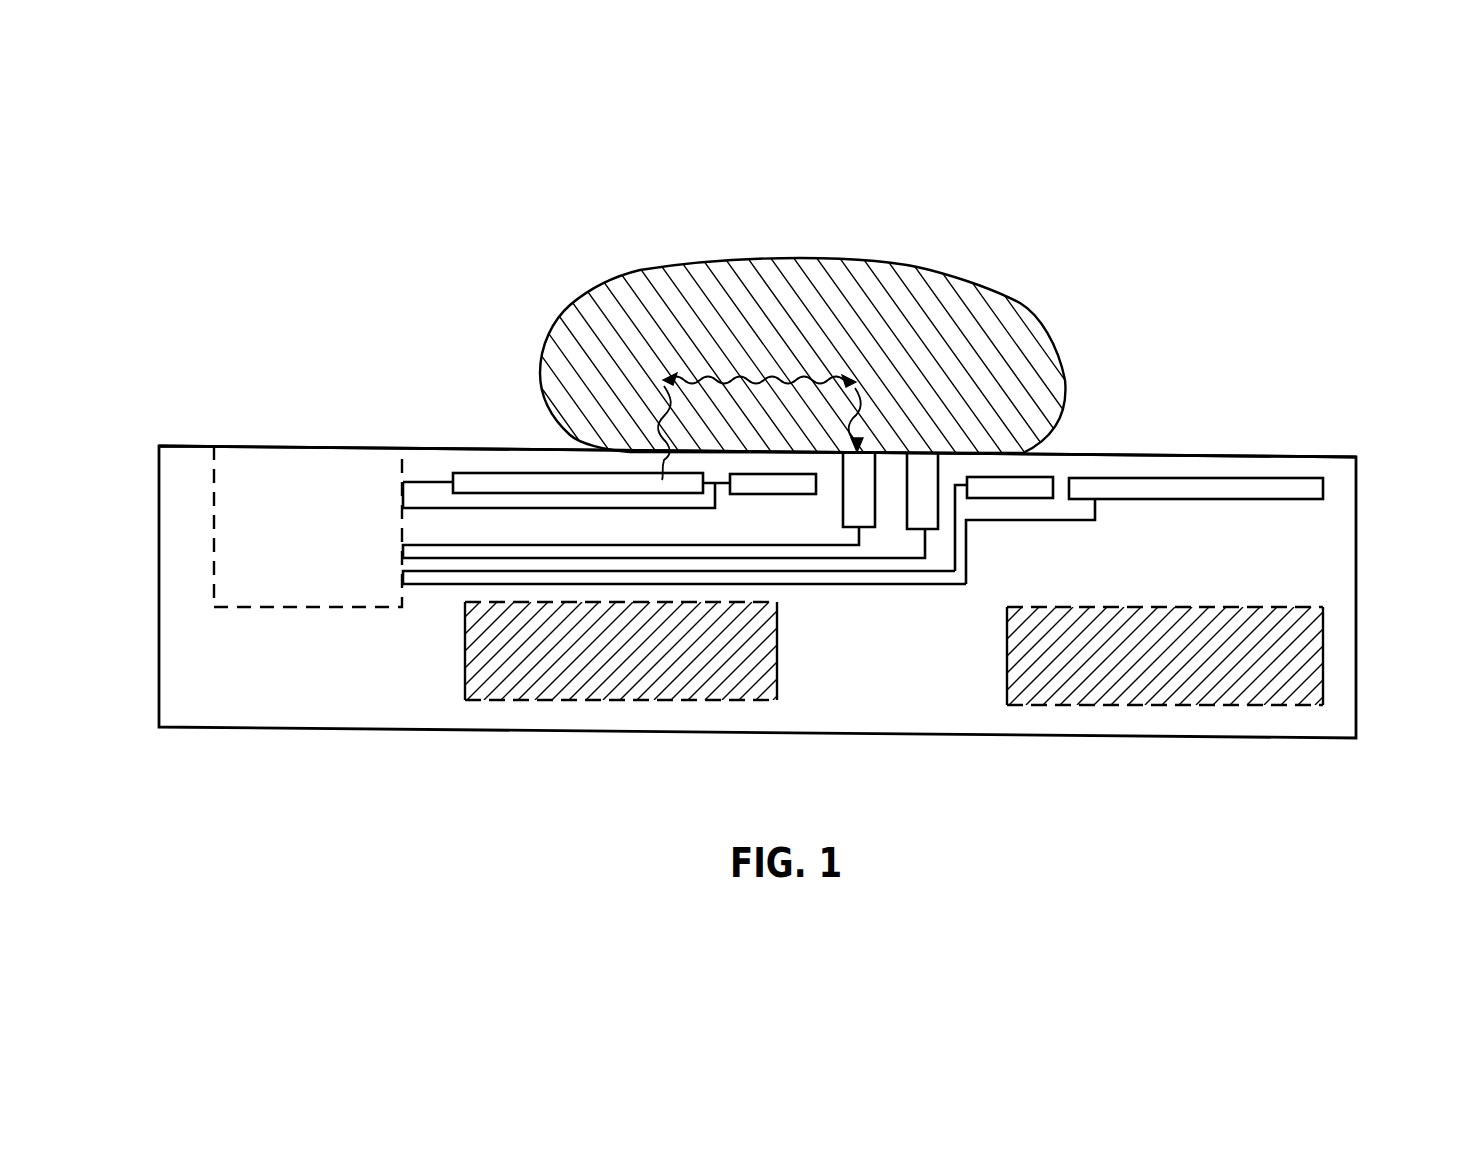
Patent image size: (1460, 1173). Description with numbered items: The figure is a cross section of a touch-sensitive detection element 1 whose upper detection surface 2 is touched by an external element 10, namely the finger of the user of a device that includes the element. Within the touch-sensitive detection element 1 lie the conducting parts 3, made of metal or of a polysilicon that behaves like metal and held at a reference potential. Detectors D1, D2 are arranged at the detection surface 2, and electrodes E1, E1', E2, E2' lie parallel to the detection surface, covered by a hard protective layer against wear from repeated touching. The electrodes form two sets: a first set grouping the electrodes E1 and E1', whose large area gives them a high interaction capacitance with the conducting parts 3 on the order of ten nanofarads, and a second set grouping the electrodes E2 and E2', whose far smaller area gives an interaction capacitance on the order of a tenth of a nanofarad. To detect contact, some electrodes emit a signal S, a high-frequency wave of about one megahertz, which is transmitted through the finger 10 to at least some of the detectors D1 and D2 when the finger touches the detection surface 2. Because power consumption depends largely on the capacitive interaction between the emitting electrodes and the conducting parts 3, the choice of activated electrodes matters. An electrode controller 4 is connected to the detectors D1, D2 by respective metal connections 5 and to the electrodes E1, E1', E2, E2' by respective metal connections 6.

The touch-sensitive detection element 1 is at (1362, 563).
The detection surface 2 is at (1312, 458).
The conducting parts 3 is at (634, 670).
The electrode controller 4 is at (212, 545).
The metal connections 5 is at (823, 547).
The metal connections 6 is at (410, 506).
The external element 10 is at (1012, 298).
The signal S is at (770, 380).
The electrode E1 is at (563, 424).
The electrode E2 is at (706, 345).
The detector D1 is at (858, 483).
The detector D2 is at (923, 483).
The electrode E1' is at (1196, 433).
The electrode E2' is at (1061, 440).